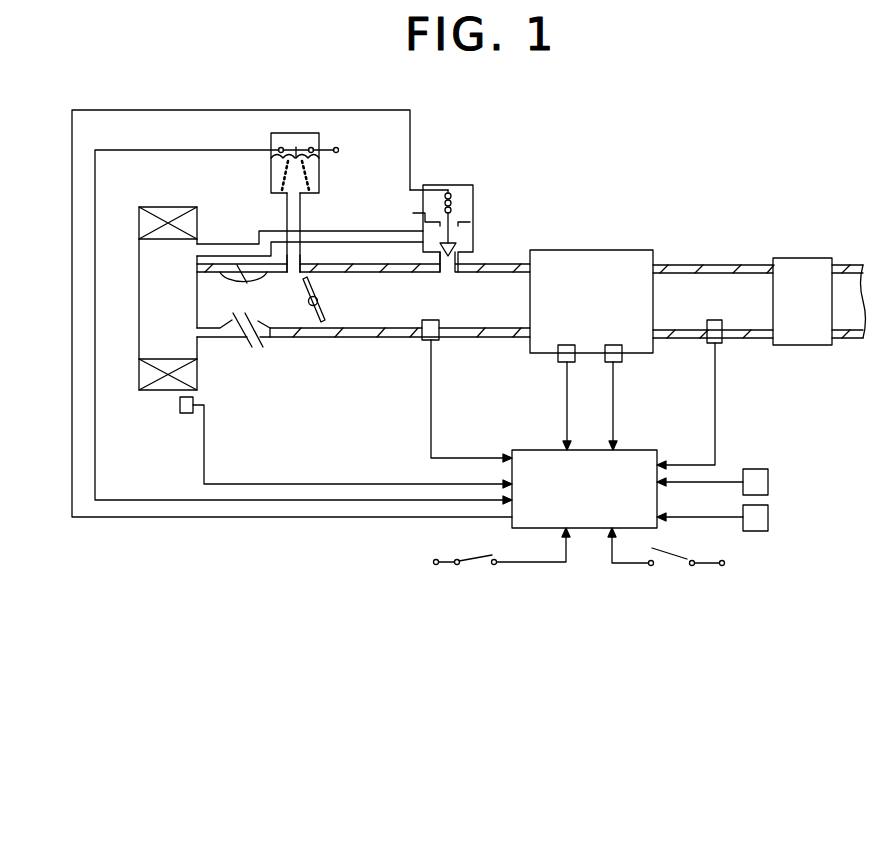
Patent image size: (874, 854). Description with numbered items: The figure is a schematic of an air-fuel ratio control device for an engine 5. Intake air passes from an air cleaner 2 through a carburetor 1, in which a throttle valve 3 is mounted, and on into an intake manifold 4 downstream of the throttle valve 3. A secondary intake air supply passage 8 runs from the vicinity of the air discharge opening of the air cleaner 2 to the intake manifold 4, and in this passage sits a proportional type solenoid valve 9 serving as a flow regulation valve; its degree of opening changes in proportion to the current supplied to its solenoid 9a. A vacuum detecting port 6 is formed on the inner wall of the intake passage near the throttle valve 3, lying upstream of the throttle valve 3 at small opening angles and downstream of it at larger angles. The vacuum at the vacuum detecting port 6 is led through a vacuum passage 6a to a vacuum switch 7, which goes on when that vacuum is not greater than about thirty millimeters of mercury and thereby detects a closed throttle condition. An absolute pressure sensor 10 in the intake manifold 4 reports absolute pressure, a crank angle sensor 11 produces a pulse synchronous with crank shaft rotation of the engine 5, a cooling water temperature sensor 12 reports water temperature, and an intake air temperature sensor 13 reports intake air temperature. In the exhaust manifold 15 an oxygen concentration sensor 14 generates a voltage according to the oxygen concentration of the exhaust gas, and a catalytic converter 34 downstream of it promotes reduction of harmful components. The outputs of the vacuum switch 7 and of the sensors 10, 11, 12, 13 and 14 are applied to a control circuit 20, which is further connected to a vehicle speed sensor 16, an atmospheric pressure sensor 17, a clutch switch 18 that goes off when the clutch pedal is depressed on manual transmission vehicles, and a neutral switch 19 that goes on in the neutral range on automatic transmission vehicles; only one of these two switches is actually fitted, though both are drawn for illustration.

The carburetor 1 is at (248, 270).
The air cleaner 2 is at (139, 385).
The throttle valve 3 is at (323, 318).
The intake manifold 4 is at (495, 264).
The engine 5 is at (630, 250).
The vacuum detecting port 6 is at (293, 270).
The vacuum passage 6a is at (301, 215).
The vacuum switch 7 is at (320, 178).
The secondary intake air supply passage 8 is at (413, 220).
The proportional type solenoid valve 9 is at (465, 208).
The solenoid 9a is at (452, 187).
The absolute pressure sensor 10 is at (441, 345).
The crank angle sensor 11 is at (557, 365).
The cooling water temperature sensor 12 is at (605, 365).
The intake air temperature sensor 13 is at (186, 413).
The oxygen concentration sensor 14 is at (720, 344).
The exhaust manifold 15 is at (708, 265).
The vehicle speed sensor 16 is at (768, 479).
The atmospheric pressure sensor 17 is at (768, 516).
The clutch switch 18 is at (481, 562).
The neutral switch 19 is at (674, 563).
The control circuit 20 is at (643, 450).
The catalytic converter 34 is at (800, 345).